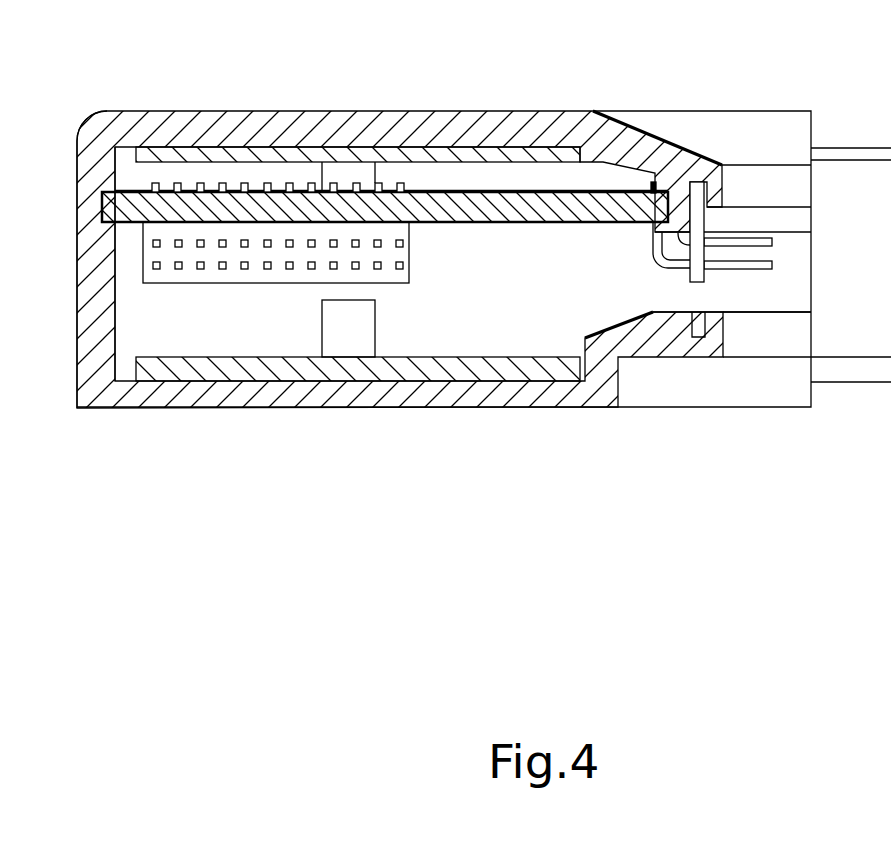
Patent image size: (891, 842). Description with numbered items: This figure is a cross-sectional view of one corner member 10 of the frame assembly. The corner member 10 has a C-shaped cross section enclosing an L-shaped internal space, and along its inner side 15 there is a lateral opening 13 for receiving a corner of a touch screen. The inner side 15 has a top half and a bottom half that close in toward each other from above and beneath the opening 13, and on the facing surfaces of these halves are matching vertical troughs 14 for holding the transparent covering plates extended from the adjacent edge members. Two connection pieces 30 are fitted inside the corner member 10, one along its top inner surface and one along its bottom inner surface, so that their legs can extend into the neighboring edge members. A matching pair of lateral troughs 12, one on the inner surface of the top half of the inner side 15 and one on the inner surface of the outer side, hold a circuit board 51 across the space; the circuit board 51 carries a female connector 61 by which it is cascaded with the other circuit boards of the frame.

The corner member 10 is at (440, 130).
The lateral trough 12 is at (104, 190).
The lateral opening 13 is at (668, 300).
The vertical trough 14 is at (713, 176).
The inner side 15 is at (657, 140).
The connection piece 30 is at (200, 152).
The circuit board 51 is at (505, 192).
The female connector 61 is at (250, 280).